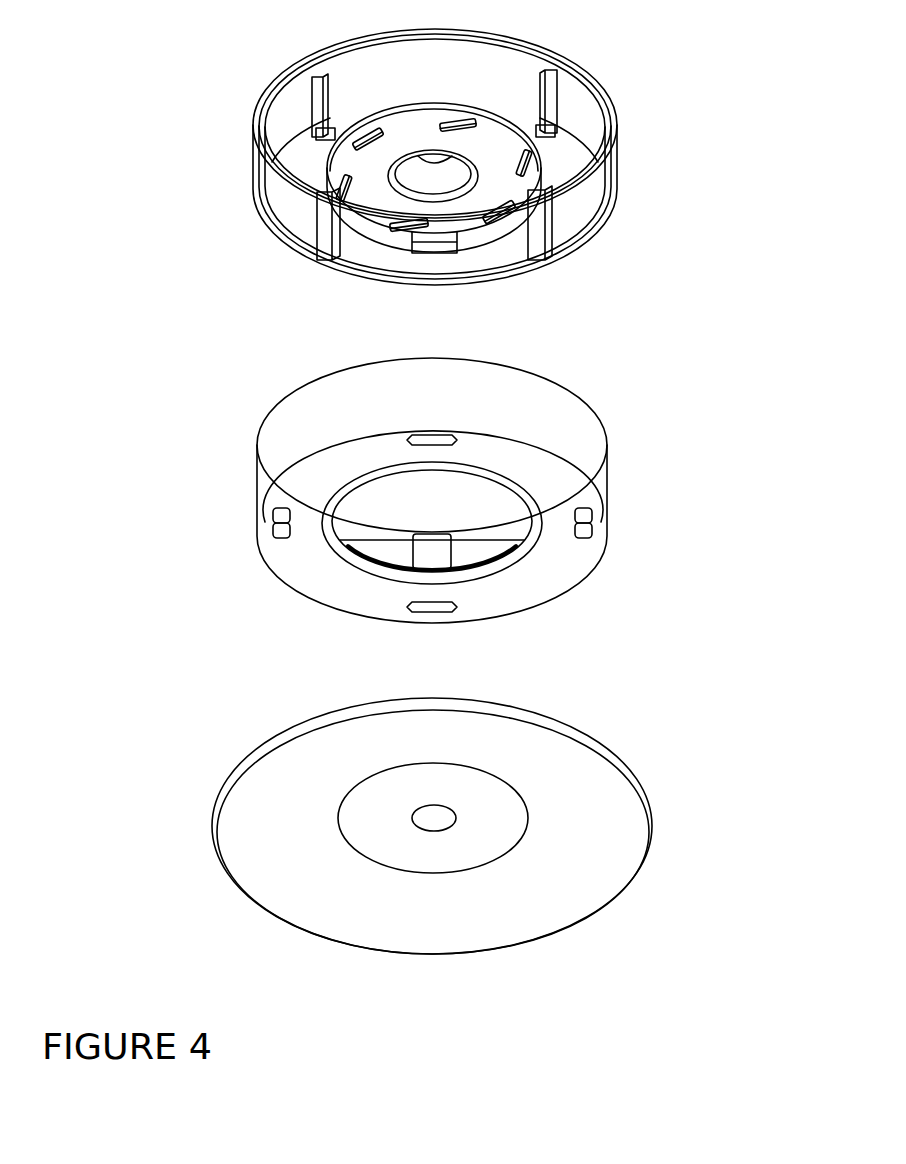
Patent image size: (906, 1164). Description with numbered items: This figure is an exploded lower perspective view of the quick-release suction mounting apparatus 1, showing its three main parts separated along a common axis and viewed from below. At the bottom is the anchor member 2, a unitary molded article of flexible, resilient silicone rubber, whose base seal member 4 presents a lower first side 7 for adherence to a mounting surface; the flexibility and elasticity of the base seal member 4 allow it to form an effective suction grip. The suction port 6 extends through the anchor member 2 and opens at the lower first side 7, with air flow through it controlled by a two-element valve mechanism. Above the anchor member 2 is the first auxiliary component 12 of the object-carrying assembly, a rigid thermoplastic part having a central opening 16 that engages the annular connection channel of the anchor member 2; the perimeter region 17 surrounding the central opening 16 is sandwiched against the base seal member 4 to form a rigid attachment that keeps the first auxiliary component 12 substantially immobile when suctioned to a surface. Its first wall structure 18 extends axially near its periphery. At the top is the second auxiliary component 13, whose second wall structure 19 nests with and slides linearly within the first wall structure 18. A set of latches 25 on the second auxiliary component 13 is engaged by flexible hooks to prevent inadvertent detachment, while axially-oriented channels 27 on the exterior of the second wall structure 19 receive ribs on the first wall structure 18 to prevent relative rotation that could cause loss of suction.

The quick-release suction mounting apparatus 1 is at (181, 354).
The anchor member 2 is at (604, 714).
The base seal member 4 is at (655, 775).
The suction port 6 is at (428, 820).
The lower first side 7 is at (615, 860).
The first auxiliary component 12 is at (649, 456).
The second auxiliary component 13 is at (637, 172).
The central opening 16 is at (345, 493).
The perimeter region 17 is at (523, 477).
The first wall structure 18 is at (565, 425).
The second wall structure 19 is at (487, 258).
The latches 25 is at (432, 250).
The axially-oriented channels 27 is at (328, 133).